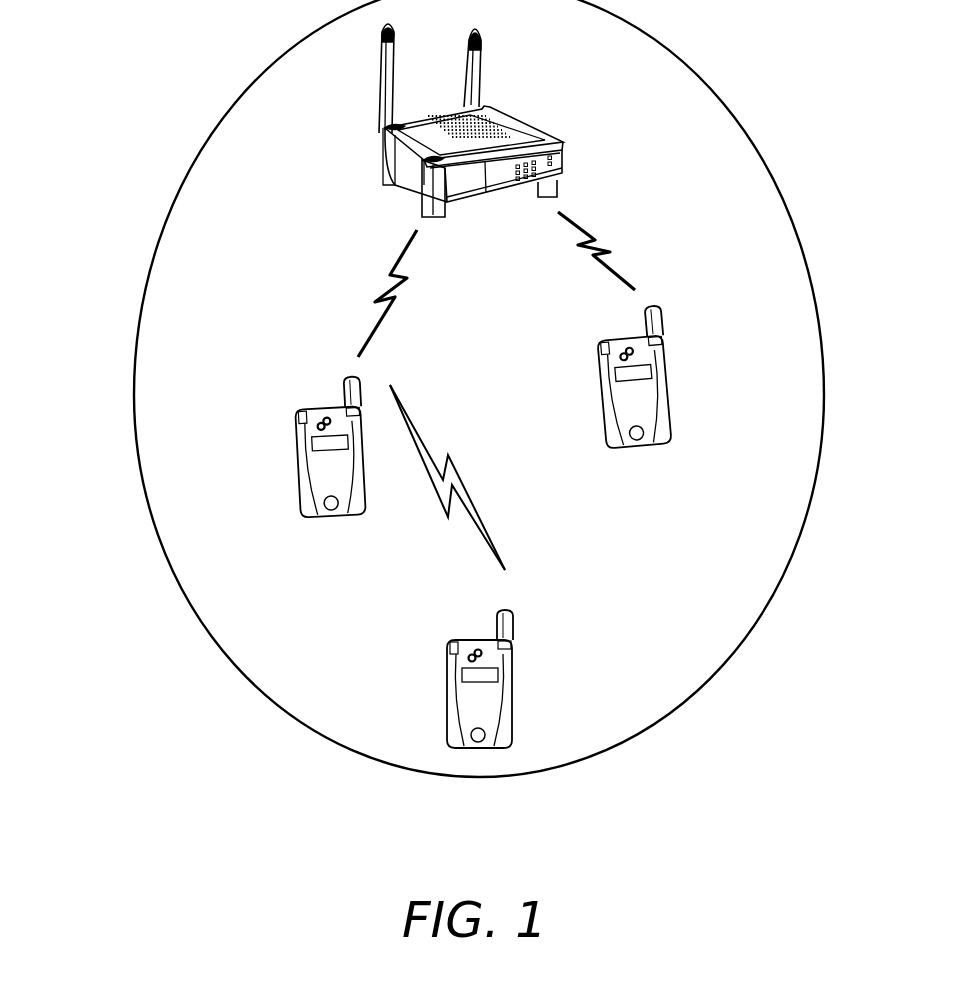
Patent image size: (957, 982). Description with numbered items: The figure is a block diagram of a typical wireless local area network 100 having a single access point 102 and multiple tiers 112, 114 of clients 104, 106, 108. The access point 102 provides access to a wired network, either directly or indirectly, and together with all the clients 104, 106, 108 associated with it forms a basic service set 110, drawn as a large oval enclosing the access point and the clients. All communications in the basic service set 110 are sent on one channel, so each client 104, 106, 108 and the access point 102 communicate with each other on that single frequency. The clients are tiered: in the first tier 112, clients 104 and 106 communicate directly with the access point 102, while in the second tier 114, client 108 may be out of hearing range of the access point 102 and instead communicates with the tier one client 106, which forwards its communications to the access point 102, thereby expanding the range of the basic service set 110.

The wireless local area network 100 is at (855, 754).
The access point 102 is at (523, 125).
The client 104 is at (667, 400).
The client 106 is at (298, 473).
The client 108 is at (512, 697).
The basic service set 110 is at (756, 620).
The tier 112 is at (80, 402).
The tier 114 is at (179, 692).